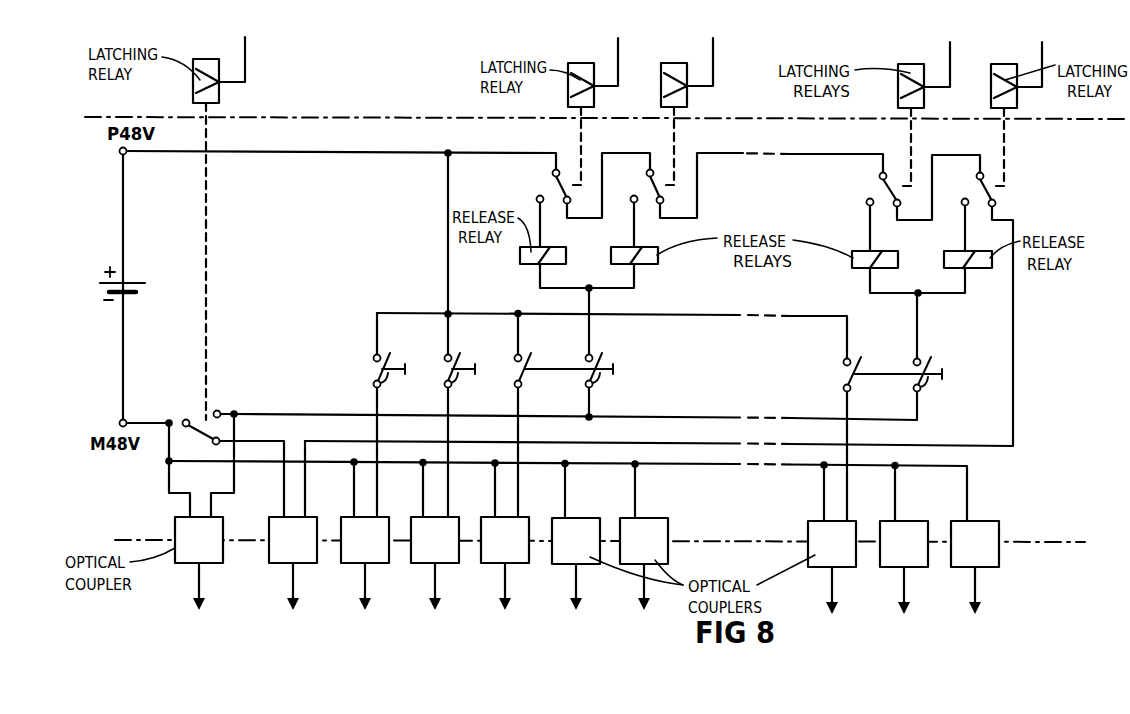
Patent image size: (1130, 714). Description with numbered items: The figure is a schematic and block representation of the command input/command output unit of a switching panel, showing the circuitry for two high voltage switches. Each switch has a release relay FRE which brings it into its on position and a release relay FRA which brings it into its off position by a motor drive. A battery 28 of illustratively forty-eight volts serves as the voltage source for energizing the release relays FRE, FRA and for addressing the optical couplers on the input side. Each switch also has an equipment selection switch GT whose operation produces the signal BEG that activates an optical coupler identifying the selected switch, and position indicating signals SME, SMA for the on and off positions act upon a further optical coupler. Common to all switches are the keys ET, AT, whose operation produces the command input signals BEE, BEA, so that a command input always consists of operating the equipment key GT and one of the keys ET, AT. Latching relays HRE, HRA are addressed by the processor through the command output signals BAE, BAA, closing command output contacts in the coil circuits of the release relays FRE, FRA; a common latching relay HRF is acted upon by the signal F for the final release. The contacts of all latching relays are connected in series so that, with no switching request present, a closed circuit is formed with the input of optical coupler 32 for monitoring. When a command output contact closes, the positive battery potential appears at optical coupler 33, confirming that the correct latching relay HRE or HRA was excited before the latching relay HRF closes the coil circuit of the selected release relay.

The battery 28 is at (143, 288).
The optical coupler 32 is at (297, 563).
The optical coupler 33 is at (210, 563).
The latching relay HRF is at (219, 97).
The latching relay HRE is at (933, 103).
The latching relay HRA is at (1026, 103).
The release relay FRE is at (860, 280).
The release relay FRA is at (987, 283).
The key ET is at (393, 381).
The key AT is at (461, 381).
The equipment selection switch GT is at (737, 382).
The command input signal BEE is at (377, 506).
The command input signal BEA is at (448, 506).
The signal BEG is at (855, 502).
The position indicating signal SME is at (923, 502).
The position indicating signal SMA is at (995, 502).
The signal F is at (256, 38).
The command output signal BAE is at (808, 43).
The command output signal BAA is at (903, 43).